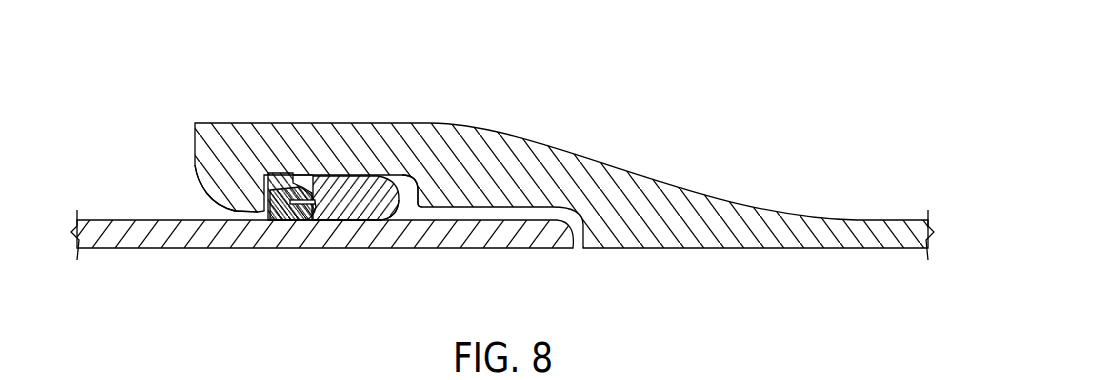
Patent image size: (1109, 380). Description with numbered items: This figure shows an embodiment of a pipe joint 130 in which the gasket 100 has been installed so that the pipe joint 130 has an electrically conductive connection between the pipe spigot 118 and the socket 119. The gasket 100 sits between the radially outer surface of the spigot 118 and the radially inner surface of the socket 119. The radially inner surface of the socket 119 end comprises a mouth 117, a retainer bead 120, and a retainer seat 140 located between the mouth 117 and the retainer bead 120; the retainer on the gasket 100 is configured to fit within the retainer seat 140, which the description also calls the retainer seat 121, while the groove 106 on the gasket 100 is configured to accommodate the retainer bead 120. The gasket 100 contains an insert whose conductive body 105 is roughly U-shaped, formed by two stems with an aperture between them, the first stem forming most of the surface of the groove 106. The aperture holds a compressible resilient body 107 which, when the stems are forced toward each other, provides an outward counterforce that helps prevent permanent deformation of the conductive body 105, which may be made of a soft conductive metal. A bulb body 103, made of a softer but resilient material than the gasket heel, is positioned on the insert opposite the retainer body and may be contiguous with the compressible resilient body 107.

The gasket 100 is at (335, 171).
The bulb body 103 is at (418, 188).
The conductive body 105 is at (273, 203).
The groove 106 is at (316, 177).
The compressible resilient body 107 is at (327, 200).
The mouth 117 is at (222, 215).
The pipe spigot 118 is at (178, 258).
The socket 119 is at (545, 128).
The retainer bead 120 is at (303, 175).
The retainer seat 121 is at (281, 173).
The pipe joint 130 is at (499, 171).
The retainer seat 140 is at (405, 202).